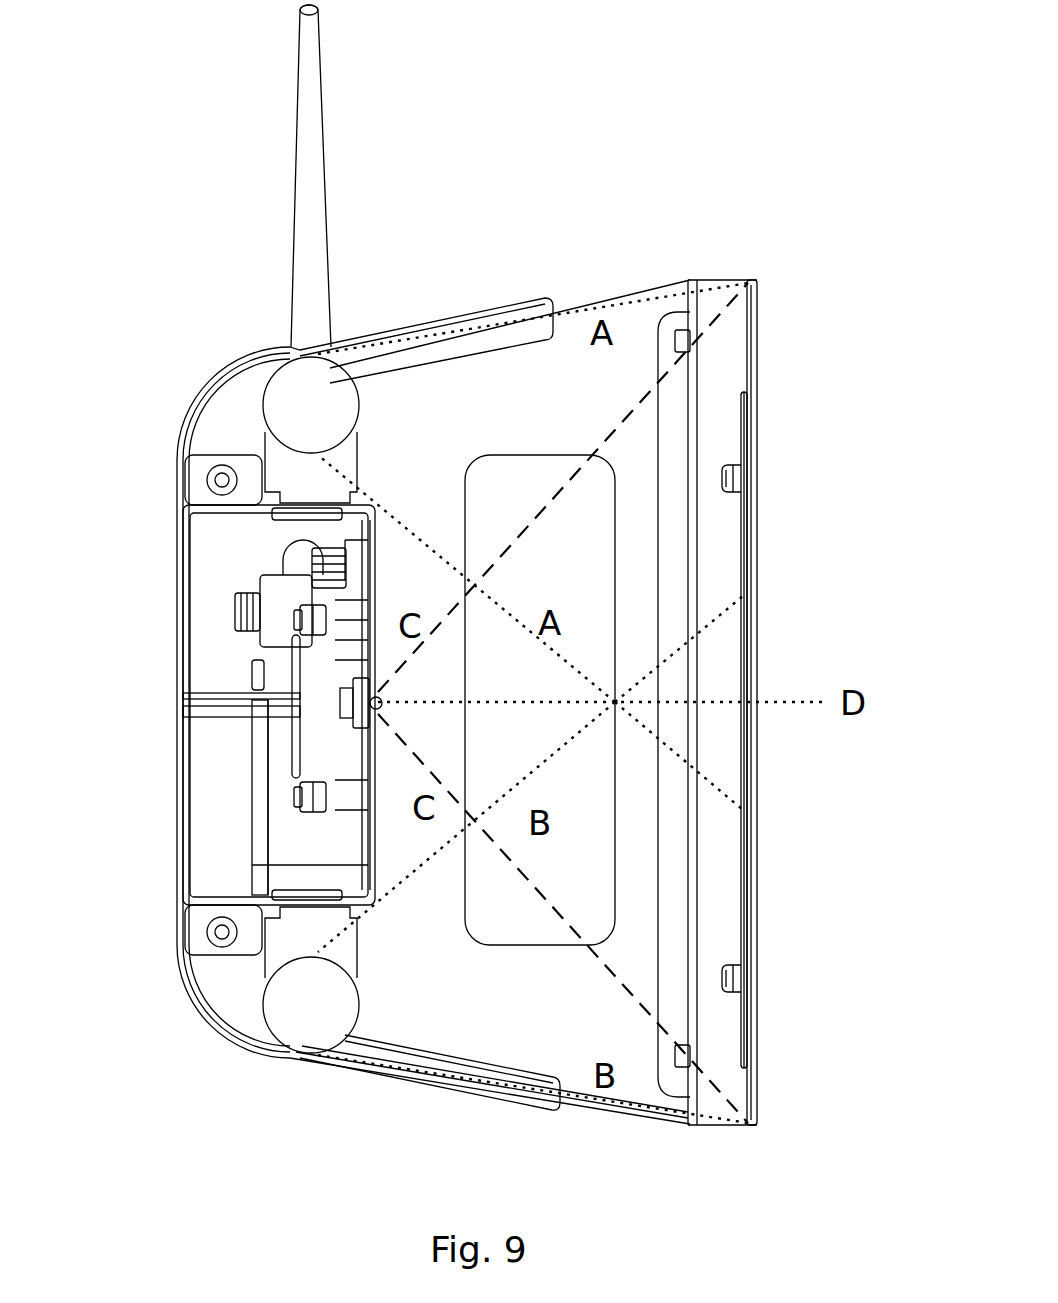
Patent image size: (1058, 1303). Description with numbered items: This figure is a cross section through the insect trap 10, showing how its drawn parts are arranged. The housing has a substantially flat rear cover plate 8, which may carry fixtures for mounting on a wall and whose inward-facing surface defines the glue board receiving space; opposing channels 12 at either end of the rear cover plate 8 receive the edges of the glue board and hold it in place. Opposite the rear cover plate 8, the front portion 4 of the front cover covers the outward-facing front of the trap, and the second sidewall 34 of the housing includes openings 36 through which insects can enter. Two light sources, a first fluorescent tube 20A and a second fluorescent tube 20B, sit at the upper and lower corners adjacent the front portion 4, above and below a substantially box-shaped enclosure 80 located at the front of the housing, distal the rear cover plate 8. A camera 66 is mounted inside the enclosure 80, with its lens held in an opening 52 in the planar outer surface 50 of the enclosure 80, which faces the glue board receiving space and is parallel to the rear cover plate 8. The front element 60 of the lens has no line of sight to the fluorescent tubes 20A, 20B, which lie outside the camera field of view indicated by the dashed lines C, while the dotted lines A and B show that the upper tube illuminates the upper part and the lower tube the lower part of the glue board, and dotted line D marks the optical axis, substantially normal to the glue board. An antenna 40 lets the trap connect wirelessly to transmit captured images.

The insect trap 10 is at (703, 113).
The front portion 4 is at (175, 640).
The rear cover plate 8 is at (762, 748).
The channels 12 is at (754, 505).
The first fluorescent tube 20A is at (258, 398).
The second fluorescent tube 20B is at (268, 1032).
The second sidewall 34 is at (513, 395).
The openings 36 is at (495, 478).
The antenna 40 is at (292, 195).
The outer surface 50 is at (380, 569).
The opening 52 is at (368, 706).
The front element 60 is at (382, 713).
The camera 66 is at (298, 683).
The enclosure 80 is at (232, 562).